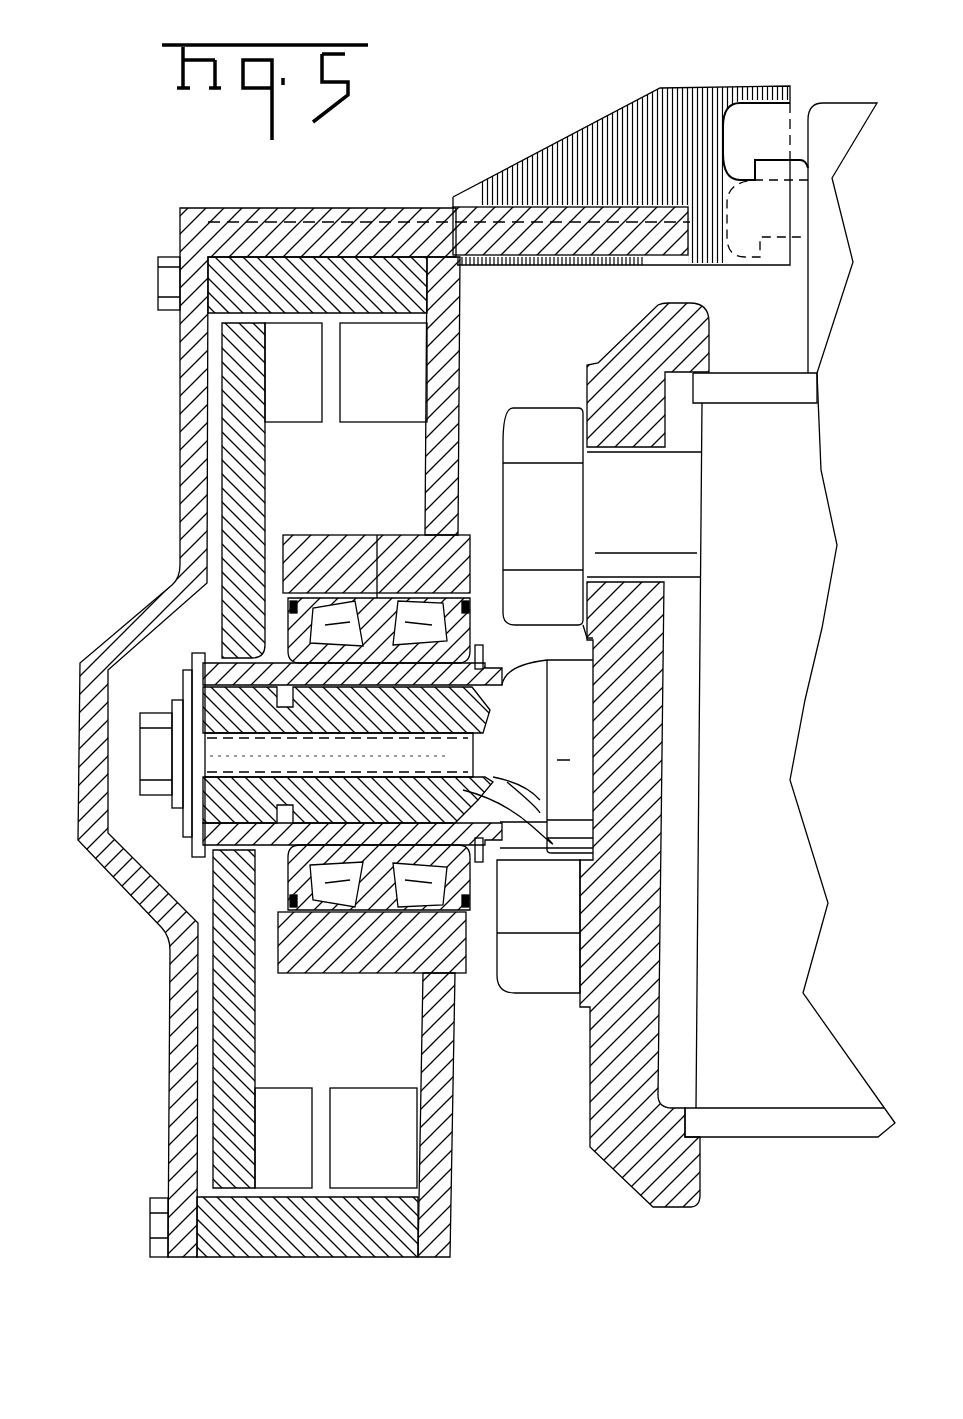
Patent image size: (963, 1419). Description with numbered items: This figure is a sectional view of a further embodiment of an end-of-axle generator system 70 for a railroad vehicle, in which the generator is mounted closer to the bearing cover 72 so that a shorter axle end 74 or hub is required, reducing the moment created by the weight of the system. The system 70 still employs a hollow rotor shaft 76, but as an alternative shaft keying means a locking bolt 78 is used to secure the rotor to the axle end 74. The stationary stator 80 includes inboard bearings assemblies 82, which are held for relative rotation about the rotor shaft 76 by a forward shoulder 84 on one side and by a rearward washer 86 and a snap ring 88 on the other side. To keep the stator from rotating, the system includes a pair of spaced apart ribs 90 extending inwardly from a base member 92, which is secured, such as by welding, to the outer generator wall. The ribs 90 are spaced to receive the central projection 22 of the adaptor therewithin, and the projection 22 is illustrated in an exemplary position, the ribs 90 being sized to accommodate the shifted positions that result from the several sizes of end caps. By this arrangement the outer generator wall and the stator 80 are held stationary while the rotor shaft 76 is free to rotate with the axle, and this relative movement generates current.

The central projection 22 is at (805, 105).
The generator system 70 is at (363, 185).
The bearing cover 72 is at (622, 1173).
The axle end 74 is at (203, 827).
The hollow rotor shaft 76 is at (260, 667).
The locking bolt 78 is at (137, 750).
The stationary stator 80 is at (382, 353).
The inboard bearings assemblies 82 is at (378, 535).
The forward shoulder 84 is at (260, 630).
The rearward washer 86 is at (475, 643).
The snap ring 88 is at (482, 858).
The ribs 90 is at (722, 86).
The base member 92 is at (300, 210).